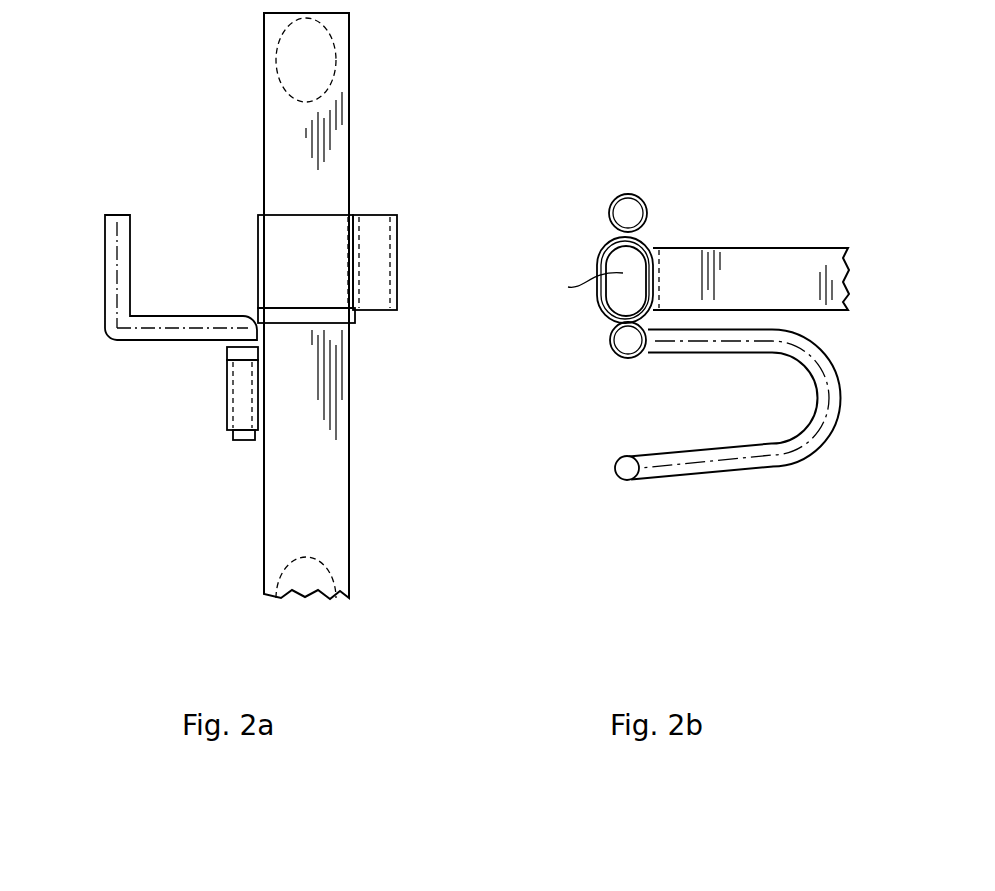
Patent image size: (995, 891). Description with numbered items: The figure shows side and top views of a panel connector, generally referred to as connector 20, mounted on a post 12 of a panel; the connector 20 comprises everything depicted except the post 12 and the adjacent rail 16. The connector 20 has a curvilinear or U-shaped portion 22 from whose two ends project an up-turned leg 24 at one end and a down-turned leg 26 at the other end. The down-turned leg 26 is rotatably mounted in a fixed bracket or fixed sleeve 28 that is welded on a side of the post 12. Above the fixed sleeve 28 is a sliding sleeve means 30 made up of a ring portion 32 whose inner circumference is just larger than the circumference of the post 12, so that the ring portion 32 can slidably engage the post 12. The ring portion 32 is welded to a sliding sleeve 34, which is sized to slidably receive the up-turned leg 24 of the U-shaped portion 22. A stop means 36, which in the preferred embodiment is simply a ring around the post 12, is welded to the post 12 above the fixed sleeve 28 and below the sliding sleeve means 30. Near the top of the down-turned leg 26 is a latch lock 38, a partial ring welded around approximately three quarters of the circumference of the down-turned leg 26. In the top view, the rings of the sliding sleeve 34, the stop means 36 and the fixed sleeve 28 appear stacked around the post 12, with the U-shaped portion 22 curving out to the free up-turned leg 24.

In FIG. 2A, the post 12 is at (349, 78).
In FIG. 2B, the rail 16 is at (750, 248).
In FIG. 2A, the connector 20 is at (124, 463).
In FIG. 2B, the connector 20 is at (586, 165).
In FIG. 2A, the U-shaped portion 22 is at (186, 316).
In FIG. 2B, the U-shaped portion 22 is at (837, 457).
In FIG. 2A, the up-turned leg 24 is at (105, 243).
In FIG. 2B, the up-turned leg 24 is at (628, 480).
In FIG. 2A, the down-turned leg 26 is at (247, 440).
In FIG. 2B, the down-turned leg 26 is at (622, 342).
In FIG. 2A, the fixed sleeve 28 is at (227, 398).
In FIG. 2B, the fixed sleeve 28 is at (628, 358).
In FIG. 2A, the sliding sleeve means 30 is at (243, 204).
In FIG. 2A, the ring portion 32 is at (305, 215).
In FIG. 2A, the sliding sleeve 34 is at (397, 220).
In FIG. 2B, the sliding sleeve 34 is at (645, 202).
In FIG. 2A, the stop means 36 is at (355, 323).
In FIG. 2B, the stop means 36 is at (600, 248).
In FIG. 2A, the latch lock 38 is at (227, 352).